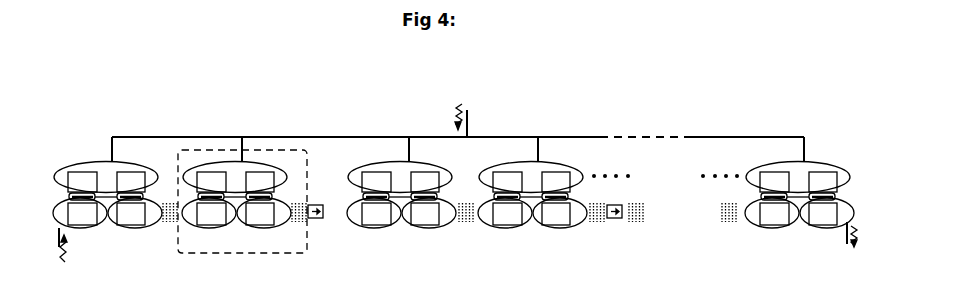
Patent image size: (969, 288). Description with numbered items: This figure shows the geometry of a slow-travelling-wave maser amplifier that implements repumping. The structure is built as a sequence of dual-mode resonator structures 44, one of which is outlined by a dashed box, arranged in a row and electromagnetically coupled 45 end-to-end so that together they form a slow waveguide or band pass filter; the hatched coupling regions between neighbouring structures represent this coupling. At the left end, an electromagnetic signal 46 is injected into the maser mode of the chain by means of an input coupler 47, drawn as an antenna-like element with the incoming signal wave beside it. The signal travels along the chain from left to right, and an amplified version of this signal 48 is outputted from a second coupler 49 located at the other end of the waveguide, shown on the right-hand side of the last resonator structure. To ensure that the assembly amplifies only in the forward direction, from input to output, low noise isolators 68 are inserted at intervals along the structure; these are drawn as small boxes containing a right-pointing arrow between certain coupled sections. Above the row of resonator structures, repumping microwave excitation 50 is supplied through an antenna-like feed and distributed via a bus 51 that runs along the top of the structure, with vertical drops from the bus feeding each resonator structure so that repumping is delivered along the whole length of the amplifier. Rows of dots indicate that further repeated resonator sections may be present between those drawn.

The dual-mode resonator structure 44 is at (307, 246).
The electromagnetic coupling 45 is at (170, 224).
The electromagnetic signal 46 is at (69, 247).
The input coupler 47 is at (59, 222).
The amplified signal 48 is at (861, 236).
The second coupler 49 is at (836, 225).
The repumping microwave excitation 50 is at (467, 125).
The bus 51 is at (333, 137).
The low noise isolator 68 is at (315, 205).